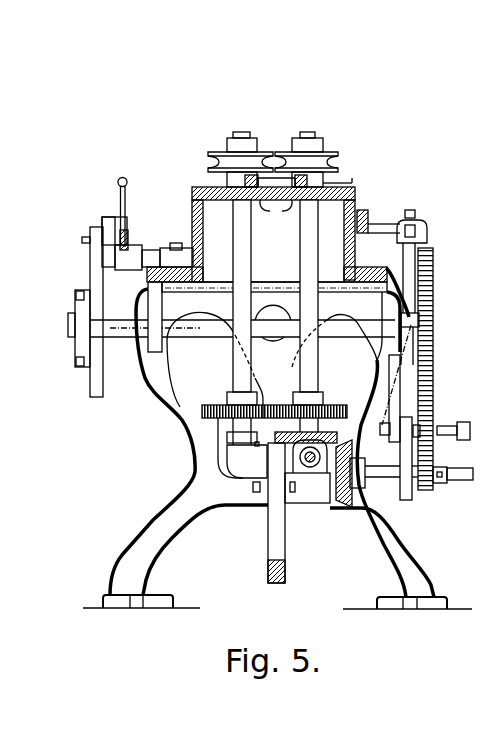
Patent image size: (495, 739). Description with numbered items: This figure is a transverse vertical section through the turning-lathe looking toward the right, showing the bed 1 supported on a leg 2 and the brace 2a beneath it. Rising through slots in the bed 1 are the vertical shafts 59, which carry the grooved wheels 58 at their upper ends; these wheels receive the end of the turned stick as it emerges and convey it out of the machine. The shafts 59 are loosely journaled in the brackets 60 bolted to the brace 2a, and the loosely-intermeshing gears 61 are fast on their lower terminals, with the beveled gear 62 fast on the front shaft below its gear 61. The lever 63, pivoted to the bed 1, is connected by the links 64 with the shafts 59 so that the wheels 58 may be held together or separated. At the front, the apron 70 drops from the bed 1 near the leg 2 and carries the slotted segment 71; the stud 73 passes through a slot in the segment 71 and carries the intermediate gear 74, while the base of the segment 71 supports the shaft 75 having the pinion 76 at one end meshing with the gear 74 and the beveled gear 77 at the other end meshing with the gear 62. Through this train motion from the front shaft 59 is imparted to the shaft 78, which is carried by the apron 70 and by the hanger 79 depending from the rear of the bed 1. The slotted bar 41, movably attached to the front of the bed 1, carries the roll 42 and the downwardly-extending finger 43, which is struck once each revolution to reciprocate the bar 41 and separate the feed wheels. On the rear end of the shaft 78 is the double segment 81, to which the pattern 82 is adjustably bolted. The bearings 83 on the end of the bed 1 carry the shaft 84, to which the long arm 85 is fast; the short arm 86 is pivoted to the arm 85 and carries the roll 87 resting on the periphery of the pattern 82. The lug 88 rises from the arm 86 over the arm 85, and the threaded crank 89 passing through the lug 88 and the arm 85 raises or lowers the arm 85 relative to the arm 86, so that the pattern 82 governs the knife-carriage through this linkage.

The bed 1 is at (192, 225).
The leg 2 is at (277, 438).
The brace 2a is at (285, 570).
The bar 41 is at (359, 210).
The roll 42 is at (433, 289).
The finger 43 is at (416, 268).
The grooved wheels 58 is at (207, 160).
The vertical shafts 59 is at (233, 222).
The brackets 60 is at (253, 487).
The gears 61 is at (210, 405).
The beveled gear 62 is at (331, 441).
The lever 63 is at (345, 187).
The links 64 is at (280, 198).
The apron 70 is at (400, 394).
The segment 71 is at (408, 452).
The stud 73 is at (448, 429).
The intermediate gear 74 is at (432, 425).
The shaft 75 is at (395, 474).
The pinion 76 is at (429, 484).
The beveled gear 77 is at (340, 507).
The shaft 78 is at (367, 330).
The hanger 79 is at (155, 348).
The double segment 81 is at (74, 304).
The pattern 82 is at (96, 288).
The bearings 83 is at (190, 266).
The shaft 84 is at (158, 250).
The long arm 85 is at (127, 238).
The short arm 86 is at (103, 240).
The roll 87 is at (94, 233).
The lug 88 is at (110, 218).
The crank 89 is at (127, 189).